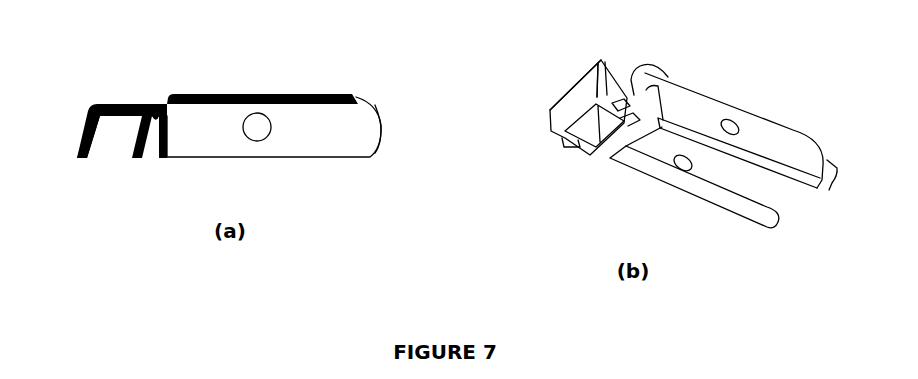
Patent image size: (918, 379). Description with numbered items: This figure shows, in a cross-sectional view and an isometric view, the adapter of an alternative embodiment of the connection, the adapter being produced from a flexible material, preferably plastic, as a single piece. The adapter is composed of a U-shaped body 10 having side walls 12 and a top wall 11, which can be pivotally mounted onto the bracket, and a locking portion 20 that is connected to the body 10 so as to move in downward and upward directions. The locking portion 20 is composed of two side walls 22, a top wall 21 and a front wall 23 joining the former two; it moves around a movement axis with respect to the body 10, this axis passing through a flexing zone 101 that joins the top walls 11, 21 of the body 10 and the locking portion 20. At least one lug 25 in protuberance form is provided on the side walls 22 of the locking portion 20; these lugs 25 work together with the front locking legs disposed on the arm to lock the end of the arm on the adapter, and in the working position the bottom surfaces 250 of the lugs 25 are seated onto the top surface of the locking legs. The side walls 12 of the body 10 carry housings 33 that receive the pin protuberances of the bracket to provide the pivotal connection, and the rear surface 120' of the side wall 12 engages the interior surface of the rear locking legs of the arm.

The body 10 is at (312, 77).
The top wall 11 is at (242, 93).
The side wall 12 is at (325, 145).
The locking portion 20 is at (107, 173).
The top wall 21 is at (120, 100).
The side wall 22 is at (97, 148).
The front wall 23 is at (82, 120).
The lug 25 is at (617, 100).
The housing 33 is at (738, 125).
The flexing zone 101 is at (152, 104).
The rear surface 120' is at (603, 180).
The bottom surface 250 is at (575, 143).